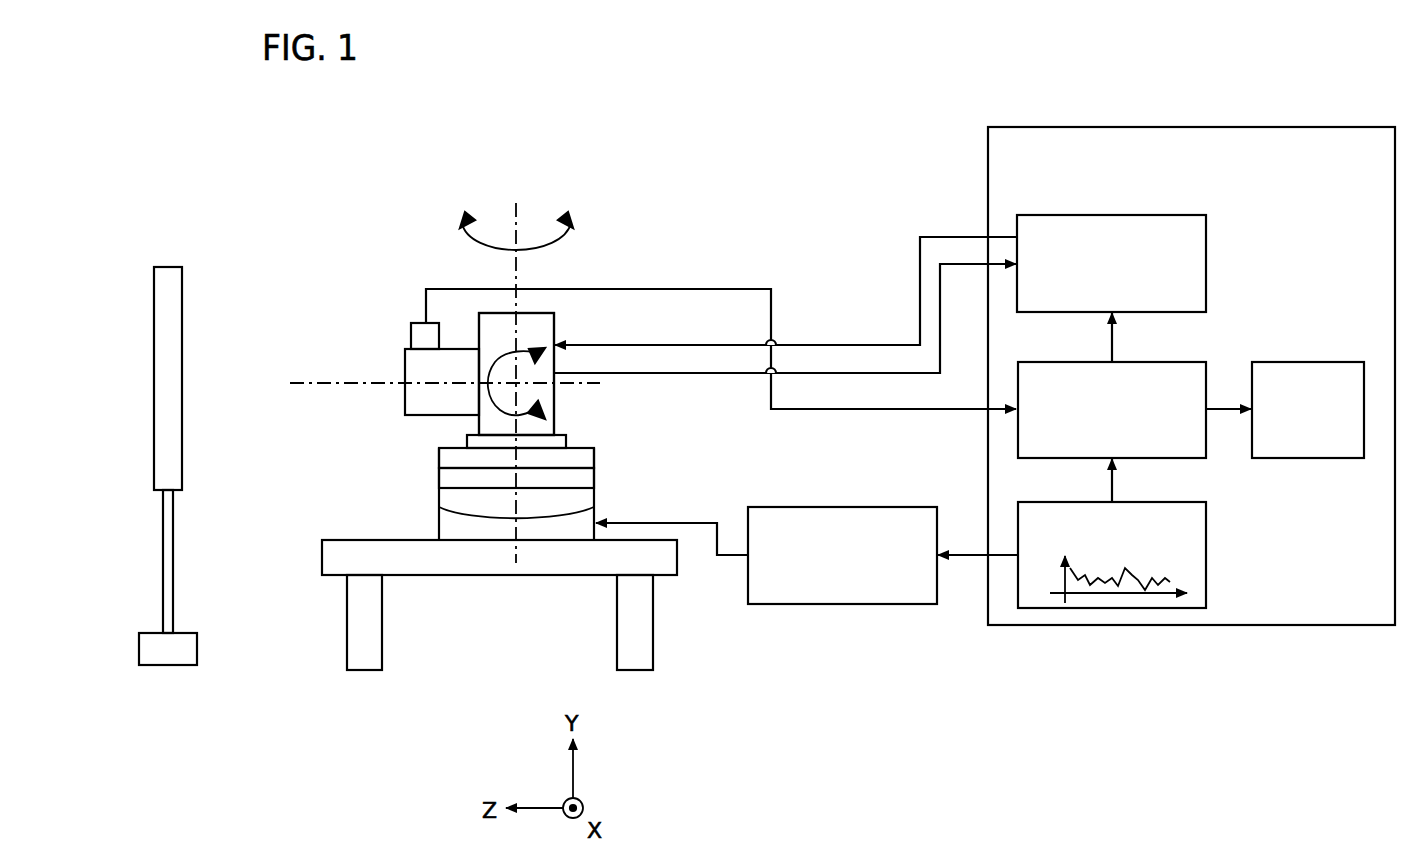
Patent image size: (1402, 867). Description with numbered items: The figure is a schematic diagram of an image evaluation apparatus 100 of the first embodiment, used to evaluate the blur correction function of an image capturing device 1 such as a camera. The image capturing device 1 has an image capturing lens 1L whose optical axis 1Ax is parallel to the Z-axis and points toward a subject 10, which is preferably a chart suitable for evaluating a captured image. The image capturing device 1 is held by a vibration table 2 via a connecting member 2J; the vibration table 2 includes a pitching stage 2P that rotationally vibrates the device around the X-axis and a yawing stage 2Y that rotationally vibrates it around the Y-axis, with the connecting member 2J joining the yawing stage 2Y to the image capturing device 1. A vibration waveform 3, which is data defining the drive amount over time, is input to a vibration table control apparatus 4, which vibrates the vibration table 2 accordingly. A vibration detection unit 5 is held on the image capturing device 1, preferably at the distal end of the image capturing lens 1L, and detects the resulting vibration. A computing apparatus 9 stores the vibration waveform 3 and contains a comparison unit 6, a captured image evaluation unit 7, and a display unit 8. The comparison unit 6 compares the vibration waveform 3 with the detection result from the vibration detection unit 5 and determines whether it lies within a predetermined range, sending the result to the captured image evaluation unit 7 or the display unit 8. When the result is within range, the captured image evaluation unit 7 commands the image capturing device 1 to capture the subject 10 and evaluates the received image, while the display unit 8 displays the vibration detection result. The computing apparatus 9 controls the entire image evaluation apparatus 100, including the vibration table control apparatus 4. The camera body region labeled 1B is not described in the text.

The image evaluation apparatus 100 is at (826, 168).
The subject 10 is at (176, 267).
The image capturing device 1 is at (537, 313).
The camera body 1B is at (554, 333).
The image capturing lens 1L is at (405, 358).
The optical axis 1Ax is at (316, 381).
The vibration detection unit 5 is at (411, 323).
The vibration table 2 is at (439, 509).
The connecting member 2J is at (567, 441).
The yawing stage 2Y is at (594, 477).
The pitching stage 2P is at (594, 507).
The vibration table control apparatus 4 is at (873, 507).
The computing apparatus 9 is at (1205, 127).
The captured image evaluation unit 7 is at (1150, 215).
The comparison unit 6 is at (1152, 362).
The display unit 8 is at (1315, 362).
The vibration waveform 3 is at (1152, 502).